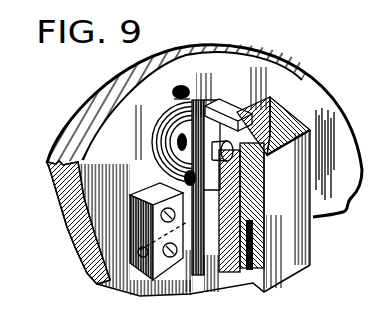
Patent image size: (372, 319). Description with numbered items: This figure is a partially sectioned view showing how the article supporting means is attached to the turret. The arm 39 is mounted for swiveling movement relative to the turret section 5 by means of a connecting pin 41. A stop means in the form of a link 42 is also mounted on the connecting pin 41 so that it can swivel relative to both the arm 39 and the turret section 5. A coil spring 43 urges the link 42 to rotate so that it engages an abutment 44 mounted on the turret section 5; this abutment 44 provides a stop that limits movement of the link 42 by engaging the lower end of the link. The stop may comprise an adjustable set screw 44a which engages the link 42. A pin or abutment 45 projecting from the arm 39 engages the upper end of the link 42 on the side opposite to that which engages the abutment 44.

The turret section 5 is at (302, 84).
The arm 39 is at (311, 218).
The connecting pin 41 is at (196, 160).
The link 42 is at (193, 141).
The coil spring 43 is at (186, 101).
The abutment 44 is at (130, 207).
The adjustable set screw 44a is at (140, 253).
The pin or abutment 45 is at (226, 115).